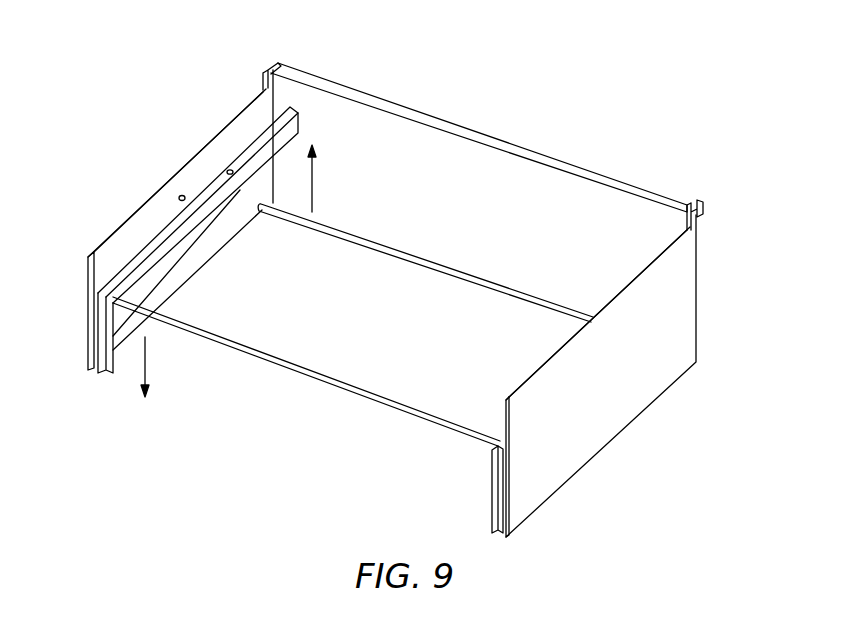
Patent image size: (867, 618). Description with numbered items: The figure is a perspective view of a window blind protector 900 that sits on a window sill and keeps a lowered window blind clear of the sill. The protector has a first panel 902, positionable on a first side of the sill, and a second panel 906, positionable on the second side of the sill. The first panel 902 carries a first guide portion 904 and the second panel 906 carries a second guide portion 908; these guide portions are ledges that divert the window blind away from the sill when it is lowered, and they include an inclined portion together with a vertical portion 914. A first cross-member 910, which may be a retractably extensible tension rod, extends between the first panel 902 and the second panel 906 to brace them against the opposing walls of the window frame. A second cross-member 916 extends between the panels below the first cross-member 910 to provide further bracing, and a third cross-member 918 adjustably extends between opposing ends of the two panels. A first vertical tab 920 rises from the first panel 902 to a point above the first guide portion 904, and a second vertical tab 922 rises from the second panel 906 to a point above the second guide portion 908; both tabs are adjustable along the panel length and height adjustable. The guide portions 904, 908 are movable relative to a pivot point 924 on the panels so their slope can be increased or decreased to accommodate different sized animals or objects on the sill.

The window blind protector 900 is at (612, 108).
The first panel 902 is at (212, 147).
The first guide portion 904 is at (150, 247).
The second panel 906 is at (690, 288).
The second guide portion 908 is at (497, 490).
The first cross-member 910 is at (488, 141).
The vertical portion 914 is at (98, 373).
The second cross-member 916 is at (428, 258).
The third cross-member 918 is at (318, 372).
The first vertical tab 920 is at (265, 63).
The second vertical tab 922 is at (700, 193).
The pivot point 924 is at (181, 207).